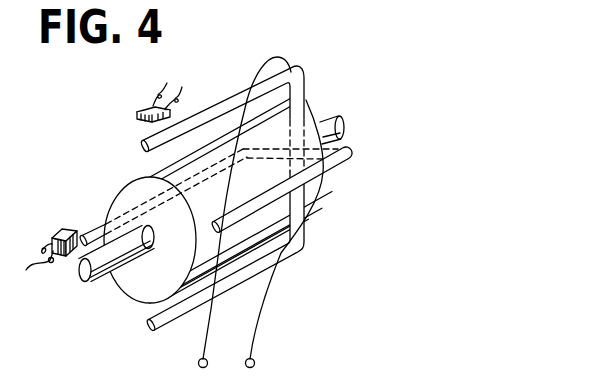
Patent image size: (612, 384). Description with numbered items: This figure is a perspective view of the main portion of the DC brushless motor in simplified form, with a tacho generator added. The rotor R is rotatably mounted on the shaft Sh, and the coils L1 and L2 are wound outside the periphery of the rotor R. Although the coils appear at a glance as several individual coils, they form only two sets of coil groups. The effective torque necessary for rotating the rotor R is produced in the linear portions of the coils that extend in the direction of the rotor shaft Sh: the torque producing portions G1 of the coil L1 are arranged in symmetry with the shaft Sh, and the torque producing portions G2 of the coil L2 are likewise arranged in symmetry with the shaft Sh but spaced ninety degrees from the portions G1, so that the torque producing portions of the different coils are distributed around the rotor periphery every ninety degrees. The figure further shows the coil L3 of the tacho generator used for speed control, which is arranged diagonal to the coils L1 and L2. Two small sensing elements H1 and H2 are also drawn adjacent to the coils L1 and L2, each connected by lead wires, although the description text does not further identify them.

The rotor R is at (137, 284).
The shaft Sh is at (100, 279).
The coil L1 is at (222, 196).
The coil L2 is at (222, 186).
The coil of the tacho generator L3 is at (284, 58).
The torque producing portion G1 is at (262, 195).
The torque producing portion G2 is at (221, 102).
The first Hall element H1 is at (63, 229).
The second Hall element H2 is at (137, 113).